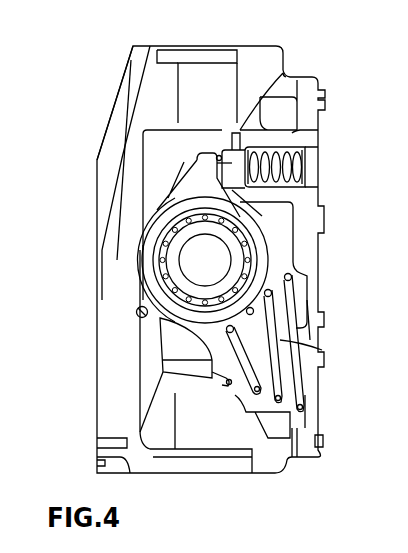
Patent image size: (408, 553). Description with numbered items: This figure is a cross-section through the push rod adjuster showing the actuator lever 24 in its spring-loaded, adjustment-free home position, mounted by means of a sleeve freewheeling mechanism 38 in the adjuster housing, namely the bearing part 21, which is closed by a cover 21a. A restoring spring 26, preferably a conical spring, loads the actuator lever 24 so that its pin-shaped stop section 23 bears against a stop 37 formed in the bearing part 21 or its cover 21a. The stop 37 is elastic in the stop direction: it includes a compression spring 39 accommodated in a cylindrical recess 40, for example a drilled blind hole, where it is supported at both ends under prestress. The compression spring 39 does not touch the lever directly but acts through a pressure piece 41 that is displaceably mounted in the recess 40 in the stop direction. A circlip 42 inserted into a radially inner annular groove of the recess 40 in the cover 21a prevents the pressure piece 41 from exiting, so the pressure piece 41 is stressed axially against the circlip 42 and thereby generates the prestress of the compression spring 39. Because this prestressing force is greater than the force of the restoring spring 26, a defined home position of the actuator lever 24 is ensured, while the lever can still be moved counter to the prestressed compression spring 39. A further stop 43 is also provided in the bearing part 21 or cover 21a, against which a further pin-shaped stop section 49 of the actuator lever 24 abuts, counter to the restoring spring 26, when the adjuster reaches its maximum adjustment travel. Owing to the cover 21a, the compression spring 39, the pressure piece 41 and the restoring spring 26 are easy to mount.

The bearing part 21 is at (147, 77).
The cover 21a is at (318, 420).
The pin-shaped stop section 23 is at (193, 166).
The actuator lever 24 is at (154, 270).
The restoring spring 26 is at (292, 290).
The stop 37 is at (220, 156).
The sleeve freewheeling mechanism 38 is at (168, 310).
The compression spring 39 is at (310, 162).
The recess 40 is at (298, 134).
The pressure piece 41 is at (223, 143).
The circlip 42 is at (282, 73).
The further stop 43 is at (322, 350).
The further pin-shaped stop section 49 is at (183, 355).